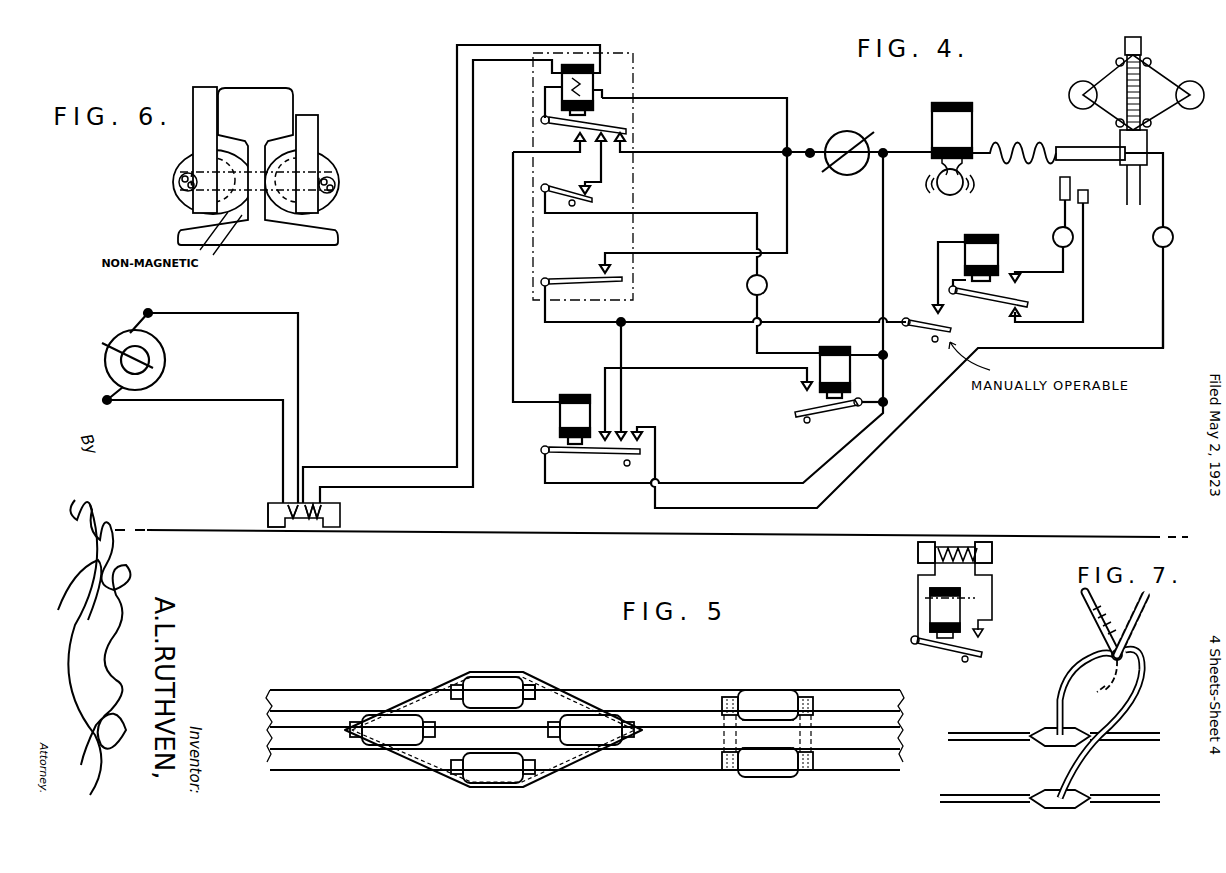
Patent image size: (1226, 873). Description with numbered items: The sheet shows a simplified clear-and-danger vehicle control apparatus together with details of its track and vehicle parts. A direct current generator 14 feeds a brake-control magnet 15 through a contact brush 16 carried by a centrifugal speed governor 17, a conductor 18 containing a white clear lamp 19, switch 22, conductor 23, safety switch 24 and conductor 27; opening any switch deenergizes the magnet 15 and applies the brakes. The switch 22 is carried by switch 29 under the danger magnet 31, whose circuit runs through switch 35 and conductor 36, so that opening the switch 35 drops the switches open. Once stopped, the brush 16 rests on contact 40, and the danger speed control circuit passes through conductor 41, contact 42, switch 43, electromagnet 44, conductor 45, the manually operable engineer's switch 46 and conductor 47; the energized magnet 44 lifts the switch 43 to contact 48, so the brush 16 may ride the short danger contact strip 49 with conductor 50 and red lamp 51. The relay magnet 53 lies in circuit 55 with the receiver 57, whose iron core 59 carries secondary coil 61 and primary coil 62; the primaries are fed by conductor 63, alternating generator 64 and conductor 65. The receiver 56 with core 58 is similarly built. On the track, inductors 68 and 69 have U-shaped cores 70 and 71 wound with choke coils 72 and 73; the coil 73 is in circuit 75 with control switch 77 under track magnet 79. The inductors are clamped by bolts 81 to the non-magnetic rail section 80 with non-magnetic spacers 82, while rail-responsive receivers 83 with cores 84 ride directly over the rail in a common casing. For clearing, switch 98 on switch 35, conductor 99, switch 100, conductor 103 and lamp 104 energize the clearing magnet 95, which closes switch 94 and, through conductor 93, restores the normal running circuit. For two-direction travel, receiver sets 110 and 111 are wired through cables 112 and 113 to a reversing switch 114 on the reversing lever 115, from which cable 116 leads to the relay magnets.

In FIG. 4, the direct current generator 14 is at (840, 150).
In FIG. 4, the magnet 15 is at (948, 122).
In FIG. 4, the contact brush or blade 16 is at (1070, 151).
In FIG. 4, the centrifugal speed control governor 17 is at (1100, 77).
In FIG. 4, the conductor 18 is at (1162, 308).
In FIG. 4, the white electric lamp 19 is at (1158, 246).
In FIG. 4, the switch 22 is at (647, 453).
In FIG. 4, the conductor 23 is at (595, 323).
In FIG. 4, the safety switch 24 is at (572, 277).
In FIG. 4, the conductor 27 is at (702, 98).
In FIG. 4, the switch 29 is at (590, 455).
In FIG. 4, the electro-magnet 31 is at (572, 413).
In FIG. 4, the switch 35 is at (570, 126).
In FIG. 4, the conductor 36 is at (510, 225).
In FIG. 4, the contact 40 is at (1087, 204).
In FIG. 4, the conductor 41 is at (1080, 267).
In FIG. 4, the contact 42 is at (1010, 314).
In FIG. 4, the switch 43 is at (990, 304).
In FIG. 4, the electromagnet 44 is at (980, 252).
In FIG. 4, the conductor 45 is at (937, 262).
In FIG. 4, the engineer's or motorman's switch 46 is at (923, 309).
In FIG. 4, the conductor 47 is at (692, 320).
In FIG. 4, the contact 48 is at (1020, 282).
In FIG. 4, the danger speed control contact strip 49 is at (1058, 190).
In FIG. 4, the conductor 50 is at (1042, 272).
In FIG. 4, the red danger electric lamp 51 is at (1053, 235).
In FIG. 4, the alternating current electro-magnet 53 is at (597, 82).
In FIG. 4, the circuit 55 is at (455, 353).
In FIG. 5, the receiver 56 is at (493, 683).
In FIG. 4, the receiver 57 is at (353, 519).
In FIG. 5, the receiver 57 is at (477, 786).
In FIG. 5, the iron core 58 is at (537, 678).
In FIG. 4, the iron core 59 is at (268, 512).
In FIG. 5, the iron core 59 is at (533, 778).
In FIG. 4, the secondary coil 61 is at (312, 519).
In FIG. 4, the primary coil 62 is at (290, 519).
In FIG. 4, the conductor 63 is at (218, 402).
In FIG. 4, the alternating or pulsating current generator 64 is at (167, 358).
In FIG. 4, the conductor 65 is at (300, 365).
In FIG. 6, the inductor 68 is at (171, 151).
In FIG. 5, the inductor 68 is at (779, 675).
In FIG. 6, the inductor 69 is at (345, 143).
In FIG. 6, the core 70 is at (308, 125).
In FIG. 5, the core 70 is at (822, 702).
In FIG. 6, the core 71 is at (200, 95).
In FIG. 6, the choke coil 72 is at (333, 205).
In FIG. 5, the choke coil 72 is at (775, 702).
In FIG. 6, the choke coil 73 is at (180, 200).
In FIG. 5, the circuit 75 is at (913, 597).
In FIG. 5, the control switch 77 is at (943, 655).
In FIG. 5, the track electro-magnet 79 is at (927, 620).
In FIG. 6, the non-magnetic rail section 80 is at (252, 98).
In FIG. 5, the non-magnetic rail section 80 is at (665, 725).
In FIG. 6, the clamping bolt 81 is at (335, 184).
In FIG. 5, the clamping bolt 81 is at (720, 773).
In FIG. 6, the non-magnetic spacer 82 is at (218, 200).
In FIG. 5, the non-magnetic spacer 82 is at (813, 741).
In FIG. 5, the rail-responsive receiver 83 is at (390, 732).
In FIG. 5, the core 84 is at (403, 695).
In FIG. 4, the conductor 93 is at (700, 370).
In FIG. 4, the switch 94 is at (800, 416).
In FIG. 4, the clearing or speed control terminating electro-magnet 95 is at (832, 367).
In FIG. 4, the switch 98 is at (628, 132).
In FIG. 4, the conductor 99 is at (605, 160).
In FIG. 4, the switch 100 is at (566, 186).
In FIG. 4, the conductor 103 is at (683, 213).
In FIG. 4, the electric lamp 104 is at (768, 283).
In FIG. 7, the set of receivers 110 is at (1050, 728).
In FIG. 7, the set of receivers 111 is at (1050, 790).
In FIG. 7, the cable 112 is at (1060, 677).
In FIG. 7, the cable 113 is at (1147, 692).
In FIG. 7, the reversing switch 114 is at (1143, 618).
In FIG. 7, the reversing lever 115 is at (1090, 615).
In FIG. 7, the cable 116 is at (1116, 687).